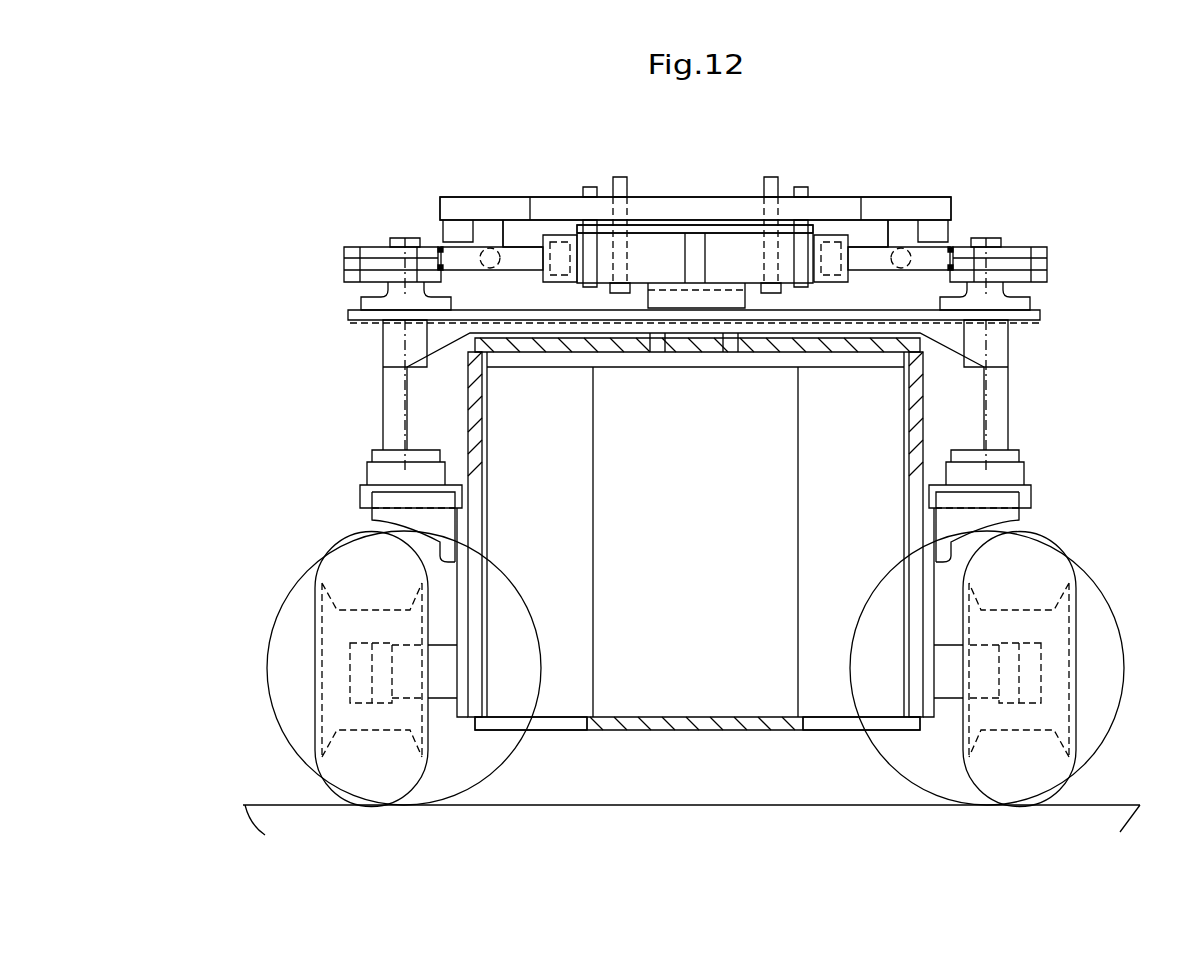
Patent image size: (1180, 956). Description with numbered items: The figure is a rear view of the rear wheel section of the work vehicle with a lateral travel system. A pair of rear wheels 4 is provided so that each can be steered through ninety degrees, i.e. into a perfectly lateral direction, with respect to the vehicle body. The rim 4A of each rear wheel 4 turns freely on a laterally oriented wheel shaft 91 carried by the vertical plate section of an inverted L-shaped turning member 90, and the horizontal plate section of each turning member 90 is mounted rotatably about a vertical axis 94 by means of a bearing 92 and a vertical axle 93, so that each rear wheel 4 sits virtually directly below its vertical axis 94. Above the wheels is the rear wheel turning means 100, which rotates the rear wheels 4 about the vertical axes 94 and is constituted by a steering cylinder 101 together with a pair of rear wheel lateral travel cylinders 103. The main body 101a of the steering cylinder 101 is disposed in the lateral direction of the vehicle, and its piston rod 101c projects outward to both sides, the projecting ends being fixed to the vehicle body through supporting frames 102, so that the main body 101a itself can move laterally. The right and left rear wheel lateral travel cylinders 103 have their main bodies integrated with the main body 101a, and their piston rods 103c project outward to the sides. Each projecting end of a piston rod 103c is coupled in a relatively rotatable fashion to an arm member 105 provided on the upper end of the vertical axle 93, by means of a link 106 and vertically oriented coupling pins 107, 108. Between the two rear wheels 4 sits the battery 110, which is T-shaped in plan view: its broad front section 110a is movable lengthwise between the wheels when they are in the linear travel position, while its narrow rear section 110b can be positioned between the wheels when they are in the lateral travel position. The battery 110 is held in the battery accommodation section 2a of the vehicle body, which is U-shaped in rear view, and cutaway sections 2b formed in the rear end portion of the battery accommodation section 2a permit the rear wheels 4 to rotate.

The rear wheel turning means 100 is at (1028, 206).
The steering cylinder 101 is at (694, 220).
The main body of the steering cylinder 101a is at (738, 242).
The piston rod of the steering cylinder 101c is at (863, 247).
The supporting frame 102 is at (490, 197).
The rear wheel lateral travel cylinder 103 is at (656, 232).
The piston rod of the rear wheel lateral travel cylinder 103c is at (523, 256).
The arm member 105 is at (362, 284).
The link 106 is at (377, 240).
The coupling pin 107 is at (343, 252).
The coupling pin 108 is at (407, 237).
The battery 110 is at (742, 684).
The front section of the battery 110a is at (566, 695).
The rear section of the battery 110b is at (780, 710).
The battery accommodation section 2a is at (651, 722).
The cutaway section 2b is at (496, 725).
The rear wheel 4 is at (350, 806).
The rim 4A is at (335, 690).
The turning member 90 is at (453, 610).
The wheel shaft 91 is at (385, 700).
The bearing 92 is at (393, 385).
The vertical axle 93 is at (350, 306).
The vertical axis 94 is at (407, 407).